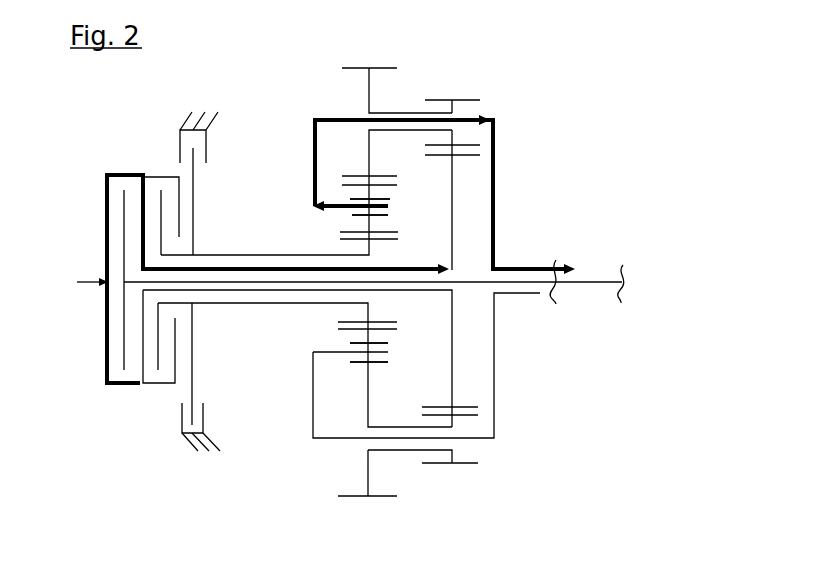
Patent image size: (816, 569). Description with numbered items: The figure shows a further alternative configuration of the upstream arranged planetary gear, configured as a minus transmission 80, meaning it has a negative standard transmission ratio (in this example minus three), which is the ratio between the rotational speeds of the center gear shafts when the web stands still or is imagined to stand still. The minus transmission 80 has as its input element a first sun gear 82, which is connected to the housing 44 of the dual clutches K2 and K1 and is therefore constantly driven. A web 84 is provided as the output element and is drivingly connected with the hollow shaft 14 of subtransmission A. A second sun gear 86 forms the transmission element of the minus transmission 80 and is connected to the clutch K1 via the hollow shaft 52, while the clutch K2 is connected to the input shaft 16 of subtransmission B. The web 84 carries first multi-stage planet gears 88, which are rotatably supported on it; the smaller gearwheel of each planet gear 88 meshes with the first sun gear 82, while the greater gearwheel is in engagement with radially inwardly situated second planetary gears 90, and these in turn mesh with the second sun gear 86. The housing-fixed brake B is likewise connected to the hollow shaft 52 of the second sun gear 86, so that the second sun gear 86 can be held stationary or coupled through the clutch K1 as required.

The housing of the dual clutches 44 is at (103, 353).
The clutch K2 is at (120, 408).
The clutch K1 is at (160, 408).
The housing-fixed brake B is at (222, 463).
The hollow shaft 52 is at (249, 304).
The hollow shaft of the subtransmission A 14 is at (537, 293).
The input shaft of the subtransmission B 16 is at (601, 281).
The minus transmission 80 is at (537, 108).
The first sun gear 82 is at (452, 368).
The web 84 is at (497, 426).
The second sun gear 86 is at (364, 241).
The first multi-stage planet gears 88 is at (403, 113).
The second planetary gears 90 is at (370, 224).